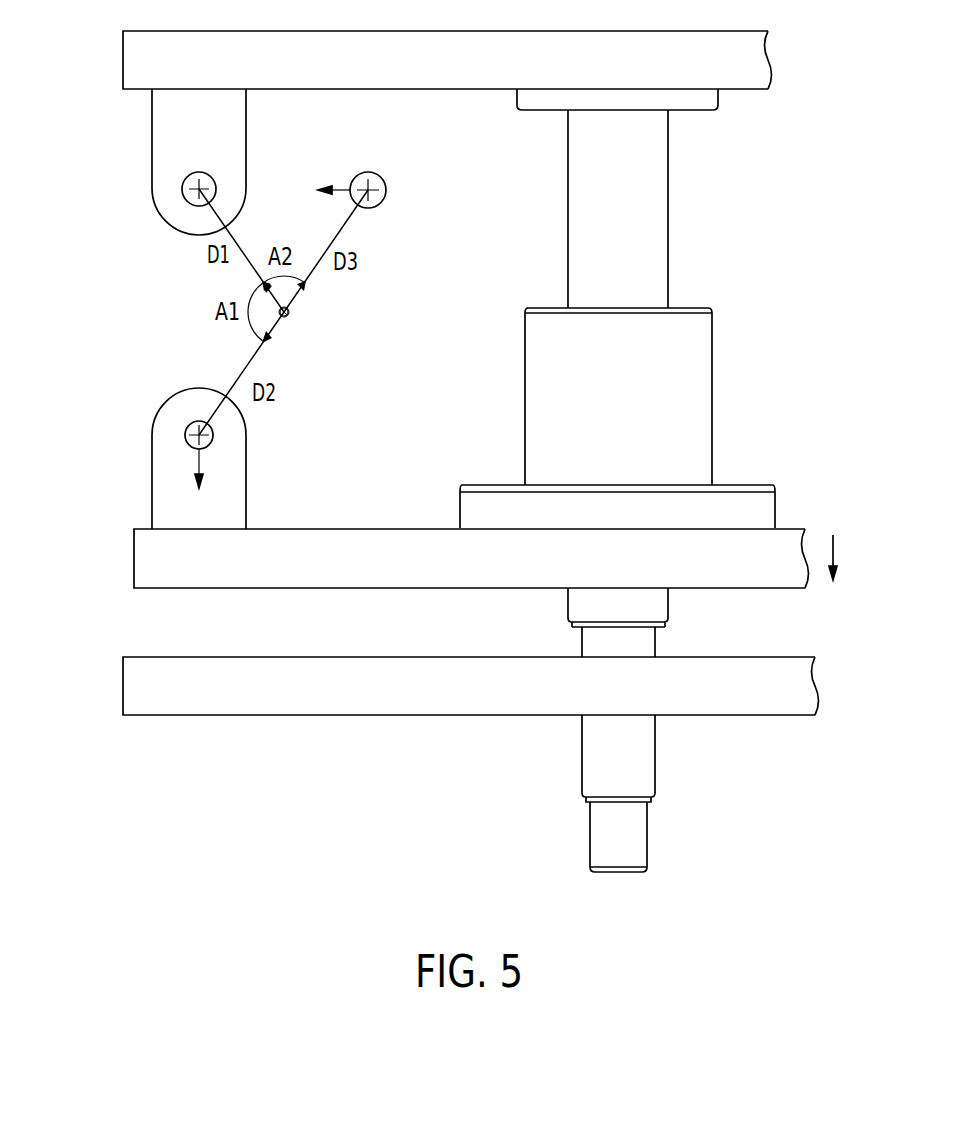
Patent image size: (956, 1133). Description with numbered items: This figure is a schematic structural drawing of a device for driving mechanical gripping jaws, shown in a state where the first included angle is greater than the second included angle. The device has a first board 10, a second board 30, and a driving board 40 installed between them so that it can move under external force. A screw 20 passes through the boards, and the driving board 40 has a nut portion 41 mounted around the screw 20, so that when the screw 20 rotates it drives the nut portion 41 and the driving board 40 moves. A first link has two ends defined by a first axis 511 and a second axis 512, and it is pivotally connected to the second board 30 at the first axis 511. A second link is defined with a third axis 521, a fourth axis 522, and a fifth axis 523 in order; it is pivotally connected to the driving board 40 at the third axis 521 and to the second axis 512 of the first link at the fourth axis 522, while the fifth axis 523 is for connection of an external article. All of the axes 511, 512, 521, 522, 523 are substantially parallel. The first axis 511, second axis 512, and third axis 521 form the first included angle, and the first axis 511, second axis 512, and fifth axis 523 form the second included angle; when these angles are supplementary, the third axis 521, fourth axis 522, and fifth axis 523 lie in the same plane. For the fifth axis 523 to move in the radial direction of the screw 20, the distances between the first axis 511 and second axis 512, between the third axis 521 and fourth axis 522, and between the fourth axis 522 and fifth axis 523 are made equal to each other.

The first board 10 is at (150, 692).
The screw 20 is at (623, 230).
The second board 30 is at (140, 65).
The driving board 40 is at (147, 563).
The nut portion 41 is at (653, 372).
The first axis 511 is at (183, 183).
The second axis 512 is at (287, 315).
The third axis 521 is at (187, 437).
The fourth axis 522 is at (284, 312).
The fifth axis 523 is at (380, 197).